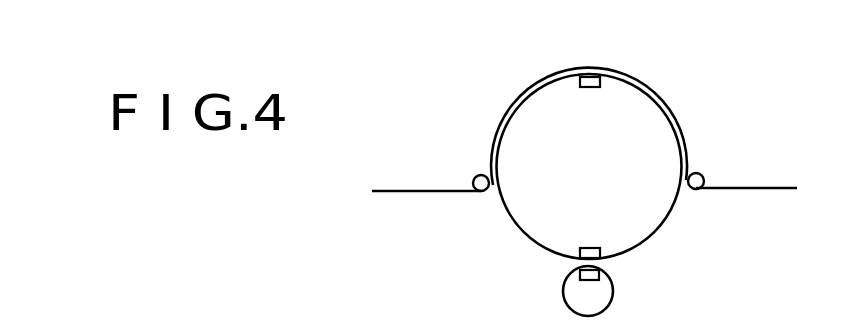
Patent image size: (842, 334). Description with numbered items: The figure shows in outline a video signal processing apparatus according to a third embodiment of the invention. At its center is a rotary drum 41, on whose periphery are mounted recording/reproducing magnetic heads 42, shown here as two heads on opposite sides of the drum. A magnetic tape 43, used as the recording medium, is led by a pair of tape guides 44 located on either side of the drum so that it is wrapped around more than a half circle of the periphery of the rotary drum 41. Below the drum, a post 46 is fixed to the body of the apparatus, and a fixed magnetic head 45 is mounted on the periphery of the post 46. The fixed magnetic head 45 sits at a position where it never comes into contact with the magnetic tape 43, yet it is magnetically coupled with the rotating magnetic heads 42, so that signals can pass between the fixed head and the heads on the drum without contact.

The rotary drum 41 is at (658, 229).
The recording/reproducing magnetic heads 42 is at (590, 87).
The magnetic tape 43 is at (765, 188).
The tape guides 44 is at (478, 174).
The fixed magnetic head 45 is at (597, 280).
The post 46 is at (564, 286).